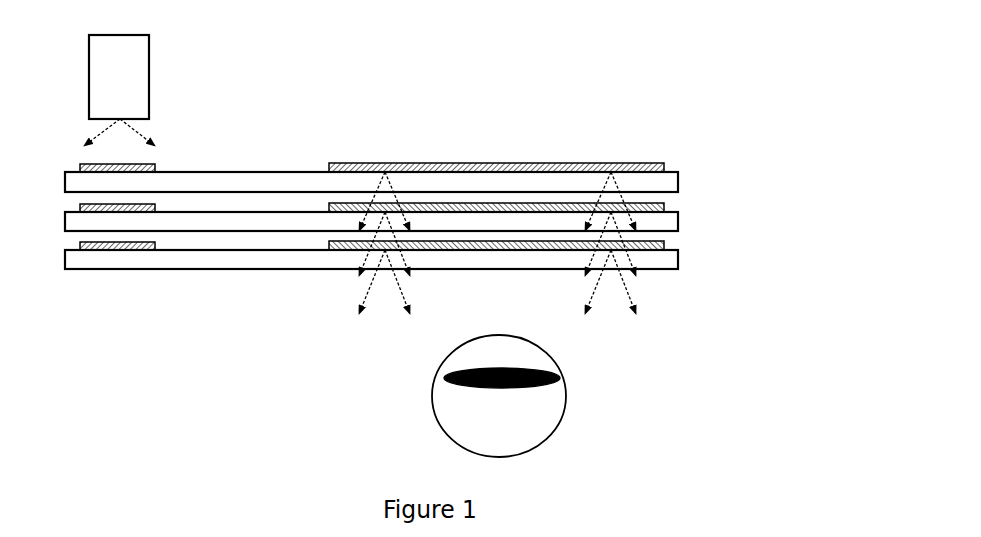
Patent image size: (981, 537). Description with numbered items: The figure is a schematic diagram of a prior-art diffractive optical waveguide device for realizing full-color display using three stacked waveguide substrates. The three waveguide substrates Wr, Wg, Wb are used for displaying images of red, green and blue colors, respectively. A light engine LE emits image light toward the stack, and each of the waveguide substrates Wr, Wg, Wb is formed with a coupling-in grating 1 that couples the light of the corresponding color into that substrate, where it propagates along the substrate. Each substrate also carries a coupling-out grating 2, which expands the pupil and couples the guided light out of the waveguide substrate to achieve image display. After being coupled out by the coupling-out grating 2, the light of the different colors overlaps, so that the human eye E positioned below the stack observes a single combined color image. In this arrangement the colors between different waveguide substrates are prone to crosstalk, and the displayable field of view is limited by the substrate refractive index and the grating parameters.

The light engine LE is at (149, 63).
The coupling-in grating 1 is at (160, 170).
The coupling-out grating 2 is at (497, 163).
The waveguide substrate Wr is at (679, 183).
The waveguide substrate Wg is at (679, 222).
The waveguide substrate Wb is at (679, 258).
The human eye E is at (566, 399).